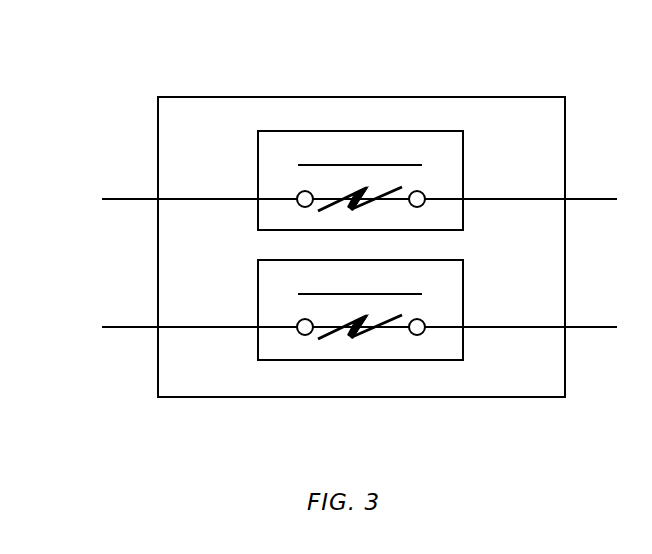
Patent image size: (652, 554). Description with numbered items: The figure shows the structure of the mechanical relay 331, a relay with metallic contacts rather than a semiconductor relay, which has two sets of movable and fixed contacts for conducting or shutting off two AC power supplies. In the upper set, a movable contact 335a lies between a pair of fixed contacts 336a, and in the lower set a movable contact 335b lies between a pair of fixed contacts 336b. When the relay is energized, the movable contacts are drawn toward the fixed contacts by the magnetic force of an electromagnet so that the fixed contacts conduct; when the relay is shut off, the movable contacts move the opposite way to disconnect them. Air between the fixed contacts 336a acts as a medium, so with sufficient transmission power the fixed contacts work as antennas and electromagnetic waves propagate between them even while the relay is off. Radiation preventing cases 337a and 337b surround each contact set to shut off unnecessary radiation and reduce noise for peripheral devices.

The mechanical relay 331 is at (178, 97).
The movable contact 335a is at (405, 163).
The movable contact 335b is at (387, 290).
The fixed contacts 336a is at (297, 185).
The fixed contacts 336b is at (297, 313).
The radiation preventing case 337a is at (320, 130).
The radiation preventing case 337b is at (452, 360).